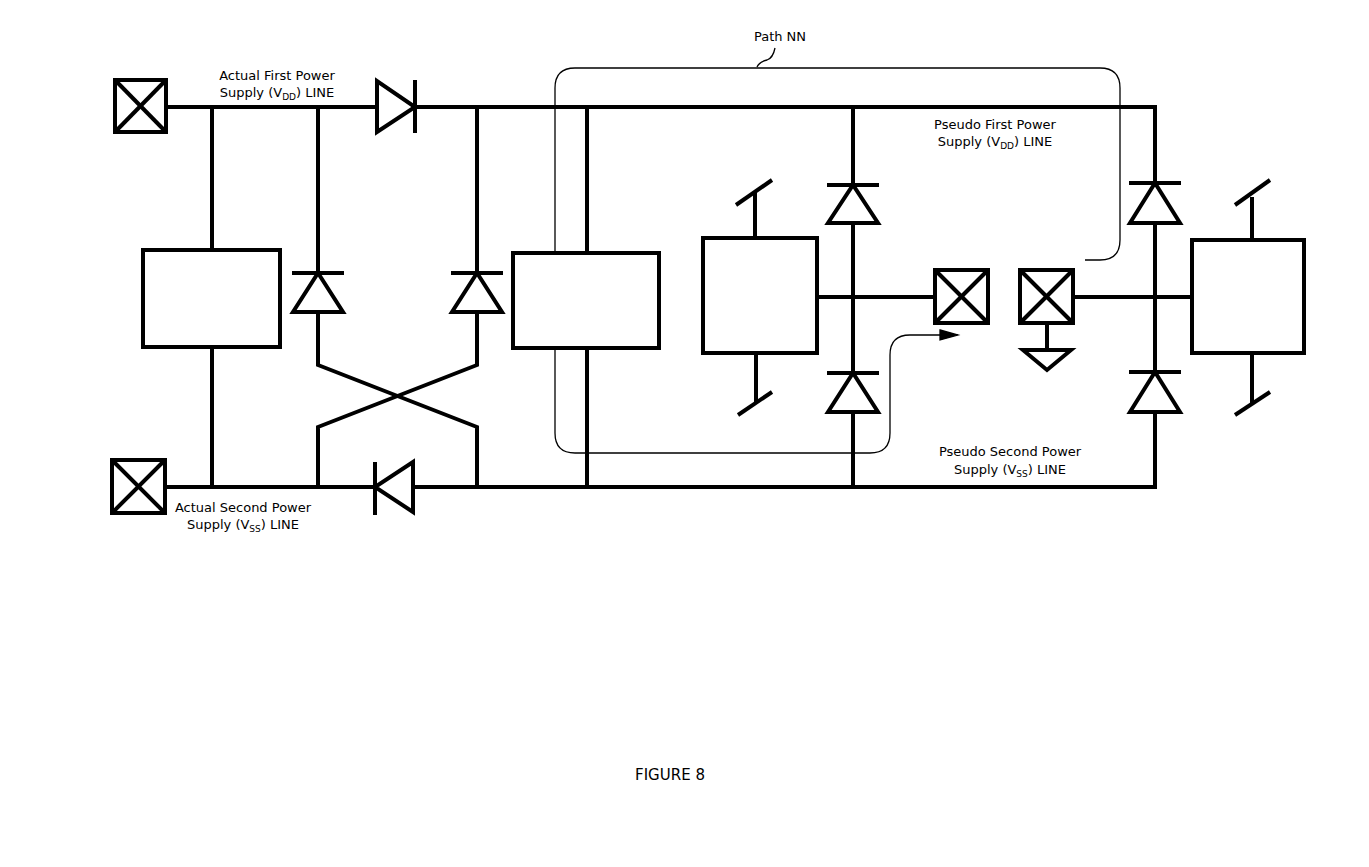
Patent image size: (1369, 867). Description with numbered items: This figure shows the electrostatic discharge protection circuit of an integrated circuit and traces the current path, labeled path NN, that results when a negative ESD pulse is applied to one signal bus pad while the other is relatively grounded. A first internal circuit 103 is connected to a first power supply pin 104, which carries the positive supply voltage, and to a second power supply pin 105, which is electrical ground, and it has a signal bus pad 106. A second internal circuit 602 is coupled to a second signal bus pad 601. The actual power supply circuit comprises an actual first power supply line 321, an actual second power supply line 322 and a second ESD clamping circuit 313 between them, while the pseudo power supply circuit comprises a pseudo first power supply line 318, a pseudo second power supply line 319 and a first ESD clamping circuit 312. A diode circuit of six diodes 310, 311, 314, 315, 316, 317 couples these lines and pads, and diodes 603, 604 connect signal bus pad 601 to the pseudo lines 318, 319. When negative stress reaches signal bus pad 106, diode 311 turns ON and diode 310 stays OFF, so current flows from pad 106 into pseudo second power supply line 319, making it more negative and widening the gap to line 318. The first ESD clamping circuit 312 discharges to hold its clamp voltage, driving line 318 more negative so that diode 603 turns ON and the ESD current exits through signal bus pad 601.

The internal circuit 103 is at (760, 295).
The first power supply pin 104 is at (134, 80).
The second power supply pin 105 is at (746, 408).
The signal bus pad 106 is at (975, 325).
The diode 310 is at (832, 212).
The diode 311 is at (834, 392).
The first ESD clamping circuit 312 is at (626, 253).
The second ESD clamping circuit 313 is at (233, 250).
The diode 314 is at (385, 81).
The diode 315 is at (412, 513).
The diode 316 is at (339, 300).
The diode 317 is at (453, 298).
The pseudo first power supply (VDD) line 318 is at (1005, 106).
The pseudo second power supply (VSS) line 319 is at (1005, 490).
The actual first power supply (VDD) line 321 is at (299, 112).
The actual second power supply (VSS) line 322 is at (333, 490).
The signal bus pad 601 is at (1073, 284).
The internal circuit 602 is at (1304, 292).
The diode 603 is at (1181, 216).
The diode 604 is at (1179, 405).